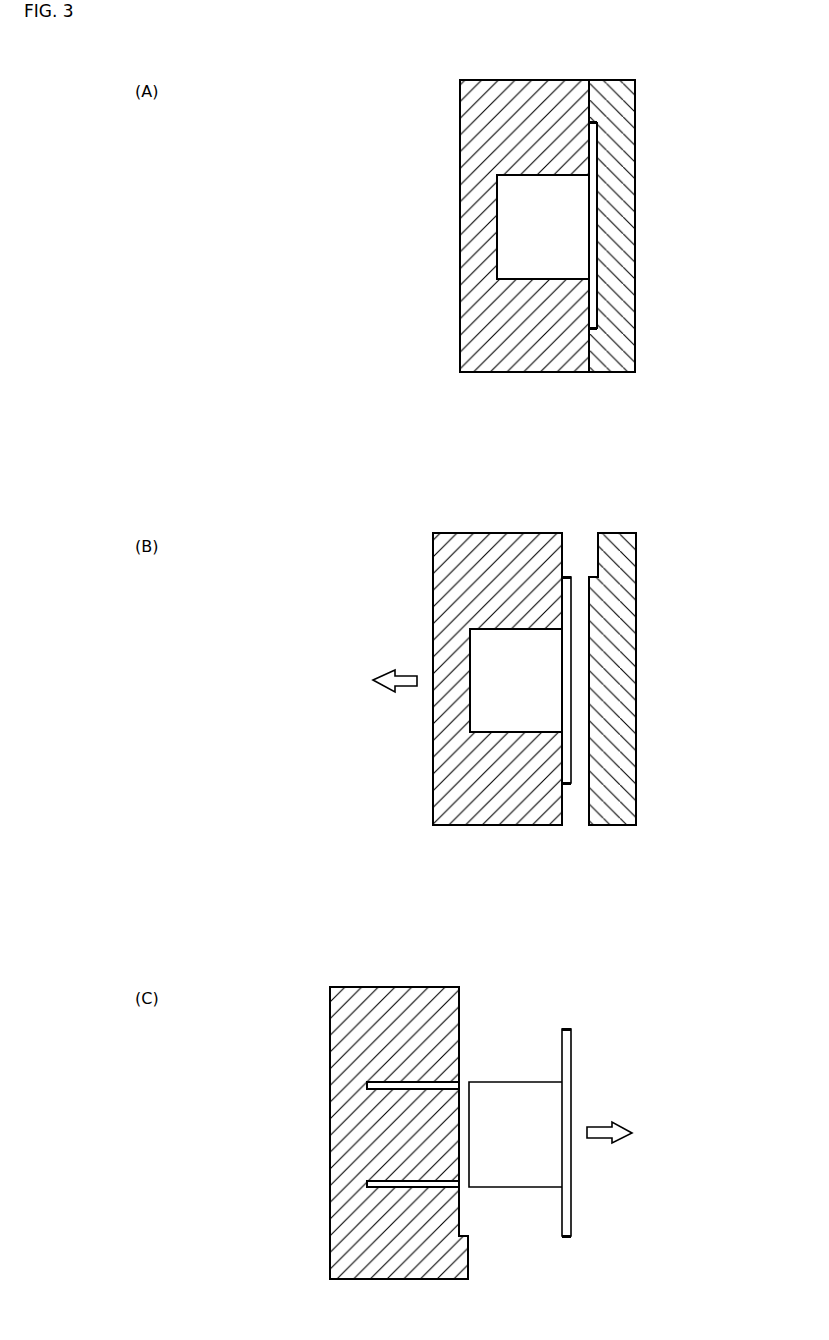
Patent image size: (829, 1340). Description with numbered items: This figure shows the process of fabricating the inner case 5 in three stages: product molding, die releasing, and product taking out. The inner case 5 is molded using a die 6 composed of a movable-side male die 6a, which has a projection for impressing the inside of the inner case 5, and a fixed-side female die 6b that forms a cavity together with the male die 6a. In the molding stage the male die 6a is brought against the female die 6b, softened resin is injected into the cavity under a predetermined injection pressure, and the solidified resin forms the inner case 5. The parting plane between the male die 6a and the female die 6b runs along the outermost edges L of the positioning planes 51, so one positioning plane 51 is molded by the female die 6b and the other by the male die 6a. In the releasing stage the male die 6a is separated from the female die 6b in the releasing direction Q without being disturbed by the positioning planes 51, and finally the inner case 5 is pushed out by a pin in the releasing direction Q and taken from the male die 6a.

The die 6 is at (438, 83).
The male die 6a is at (460, 150).
The female die 6b is at (636, 214).
The inner case 5 is at (532, 236).
The positioning plane 51 is at (594, 122).
The outermost edge L is at (586, 123).
The releasing direction Q is at (502, 907).